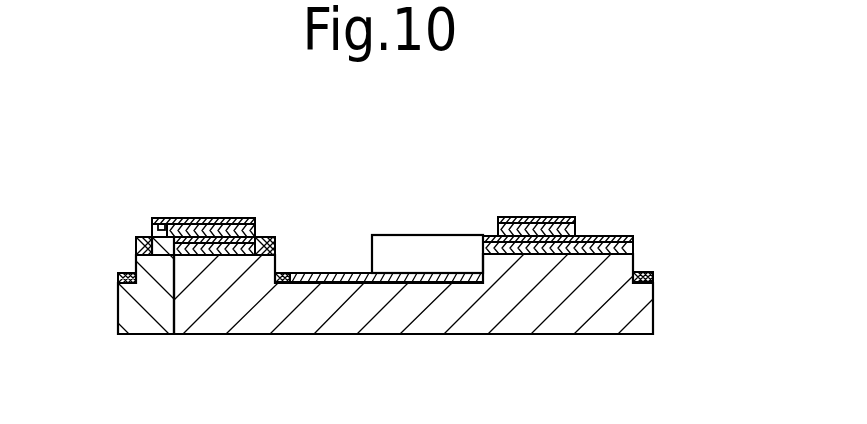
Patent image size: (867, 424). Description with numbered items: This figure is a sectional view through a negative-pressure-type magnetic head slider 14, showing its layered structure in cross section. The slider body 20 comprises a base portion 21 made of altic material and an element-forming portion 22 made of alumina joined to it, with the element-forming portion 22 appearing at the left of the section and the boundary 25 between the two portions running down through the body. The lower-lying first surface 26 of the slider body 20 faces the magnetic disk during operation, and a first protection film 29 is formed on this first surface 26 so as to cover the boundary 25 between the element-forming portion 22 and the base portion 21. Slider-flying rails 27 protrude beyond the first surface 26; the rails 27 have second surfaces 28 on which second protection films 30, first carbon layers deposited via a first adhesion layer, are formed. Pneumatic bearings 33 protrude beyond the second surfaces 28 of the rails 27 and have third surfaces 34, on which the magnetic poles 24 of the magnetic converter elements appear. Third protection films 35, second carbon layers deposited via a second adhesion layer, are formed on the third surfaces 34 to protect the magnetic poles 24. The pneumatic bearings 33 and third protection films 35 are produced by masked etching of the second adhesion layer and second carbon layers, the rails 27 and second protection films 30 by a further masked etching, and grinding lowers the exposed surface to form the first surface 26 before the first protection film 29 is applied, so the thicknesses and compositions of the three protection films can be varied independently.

The magnetic head slider 14 is at (403, 167).
The slider body 20 is at (653, 303).
The base portion 21 is at (328, 322).
The element-forming portion 22 is at (148, 322).
The magnetic pole 24 is at (163, 223).
The boundary 25 is at (175, 297).
The first surface 26 is at (350, 282).
The slider-flying rail 27 is at (615, 268).
The second surface 28 is at (597, 242).
The first protection film 29 is at (124, 274).
The second protection film 30 is at (140, 237).
The pneumatic bearing 33 is at (237, 237).
The third surface 34 is at (210, 220).
The third protection film 35 is at (195, 226).